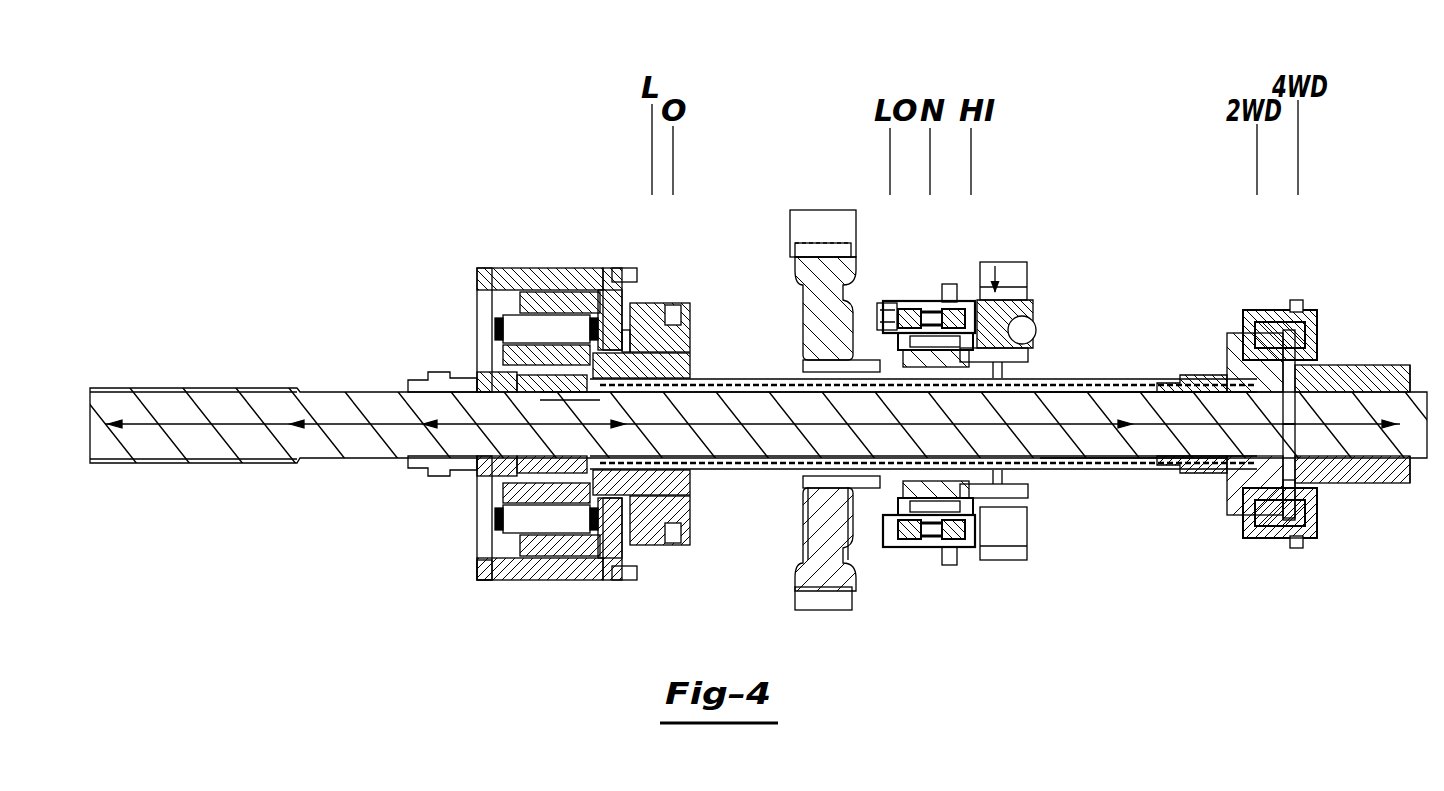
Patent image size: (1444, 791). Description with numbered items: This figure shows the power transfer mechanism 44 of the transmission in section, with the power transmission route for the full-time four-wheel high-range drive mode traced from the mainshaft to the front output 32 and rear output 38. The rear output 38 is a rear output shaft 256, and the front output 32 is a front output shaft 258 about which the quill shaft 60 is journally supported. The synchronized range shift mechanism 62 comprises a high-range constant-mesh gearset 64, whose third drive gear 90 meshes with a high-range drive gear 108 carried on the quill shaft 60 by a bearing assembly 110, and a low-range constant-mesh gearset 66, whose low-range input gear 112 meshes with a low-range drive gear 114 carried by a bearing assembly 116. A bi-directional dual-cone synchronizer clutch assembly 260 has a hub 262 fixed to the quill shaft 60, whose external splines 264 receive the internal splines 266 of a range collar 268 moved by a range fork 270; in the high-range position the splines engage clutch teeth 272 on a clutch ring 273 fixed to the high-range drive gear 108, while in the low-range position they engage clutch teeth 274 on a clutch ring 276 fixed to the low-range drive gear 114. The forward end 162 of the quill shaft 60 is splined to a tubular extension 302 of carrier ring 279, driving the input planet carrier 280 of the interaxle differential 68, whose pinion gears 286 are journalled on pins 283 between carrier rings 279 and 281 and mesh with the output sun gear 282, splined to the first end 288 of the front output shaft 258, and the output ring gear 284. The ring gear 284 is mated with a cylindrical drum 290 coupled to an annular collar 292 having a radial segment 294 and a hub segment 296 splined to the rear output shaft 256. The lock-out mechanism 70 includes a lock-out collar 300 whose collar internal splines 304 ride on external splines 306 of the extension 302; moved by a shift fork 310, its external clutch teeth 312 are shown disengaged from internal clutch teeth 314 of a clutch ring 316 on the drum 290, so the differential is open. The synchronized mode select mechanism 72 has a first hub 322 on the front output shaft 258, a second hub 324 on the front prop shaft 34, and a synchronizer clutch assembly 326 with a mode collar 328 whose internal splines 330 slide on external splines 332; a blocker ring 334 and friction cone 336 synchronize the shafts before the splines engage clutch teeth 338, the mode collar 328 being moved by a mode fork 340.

The front output 32 is at (1166, 450).
The front prop shaft 34 is at (1412, 398).
The rear output 38 is at (340, 458).
The power transfer mechanism 44 is at (1130, 208).
The quill shaft 60 is at (806, 550).
The synchronized range shift mechanism 62 is at (987, 226).
The high-range constant-mesh gearset 64 is at (1027, 566).
The low-range constant-mesh gearset 66 is at (822, 620).
The interaxle differential 68 is at (552, 250).
The lock-out mechanism 70 is at (654, 292).
The synchronized mode select mechanism 72 is at (1305, 265).
The third drive gear 90 is at (1030, 280).
The high-range drive gear 108 is at (1046, 316).
The bearing assembly 110 is at (1044, 355).
The low-range input gear 112 is at (812, 225).
The low-range drive gear 114 is at (800, 605).
The bearing assembly 116 is at (860, 487).
The forward end 162 is at (650, 462).
The rear output shaft 256 is at (165, 455).
The front output shaft 258 is at (1130, 445).
The bi-directional dual-cone synchronizer clutch assembly 260 is at (955, 595).
The hub 262 is at (965, 398).
The external splines 264 is at (905, 301).
The internal splines 266 is at (932, 565).
The range collar 268 is at (965, 565).
The range fork 270 is at (958, 292).
The clutch teeth 272 is at (1032, 542).
The clutch ring 273 is at (1032, 512).
The clutch teeth 274 is at (882, 302).
The clutch ring 276 is at (805, 332).
The carrier ring 279 is at (578, 300).
The input planet carrier 280 is at (512, 552).
The carrier ring 281 is at (482, 346).
The output sun gear 282 is at (578, 398).
The pins 283 is at (478, 548).
The output ring gear 284 is at (578, 580).
The pinion gears 286 is at (540, 555).
The first end 288 is at (455, 478).
The cylindrical drum 290 is at (600, 585).
The annular collar 292 is at (478, 552).
The radial segment 294 is at (492, 585).
The hub segment 296 is at (440, 370).
The lock-out collar 300 is at (690, 335).
The tubular extension 302 is at (690, 364).
The collar internal splines 304 is at (690, 518).
The external splines 306 is at (690, 485).
The shift fork 310 is at (700, 295).
The external clutch teeth 312 is at (682, 545).
The internal clutch teeth 314 is at (648, 568).
The clutch ring 316 is at (640, 582).
The first hub 322 is at (1188, 378).
The second hub 324 is at (1390, 480).
The synchronizer clutch assembly 326 is at (1300, 575).
The mode collar 328 is at (1275, 545).
The internal splines 330 is at (1262, 312).
The external splines 332 is at (1262, 540).
The blocker ring 334 is at (1305, 540).
The friction cone 336 is at (1305, 462).
The clutch teeth 338 is at (1305, 306).
The mode fork 340 is at (1300, 552).